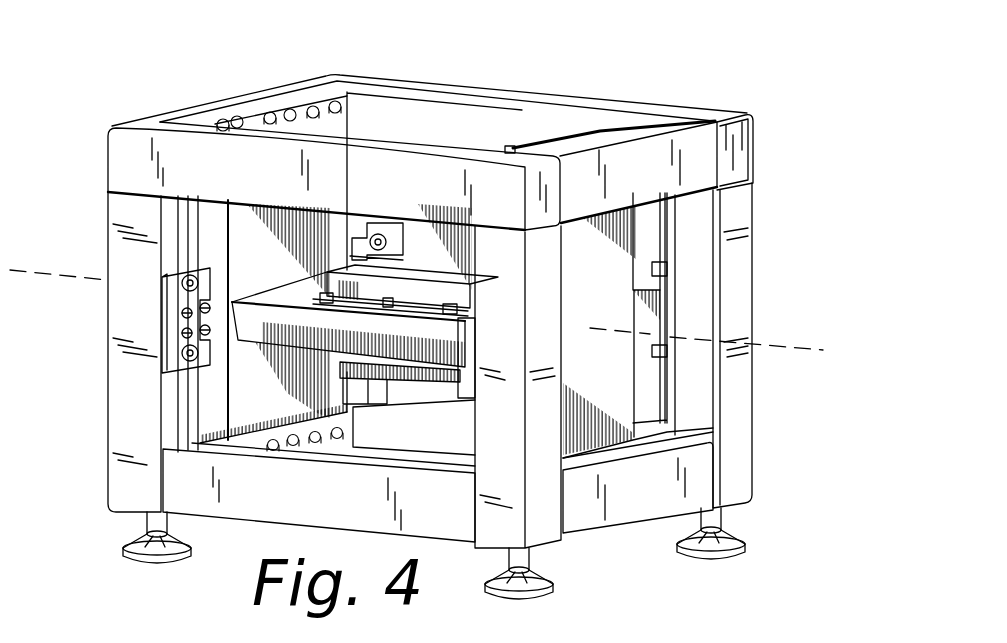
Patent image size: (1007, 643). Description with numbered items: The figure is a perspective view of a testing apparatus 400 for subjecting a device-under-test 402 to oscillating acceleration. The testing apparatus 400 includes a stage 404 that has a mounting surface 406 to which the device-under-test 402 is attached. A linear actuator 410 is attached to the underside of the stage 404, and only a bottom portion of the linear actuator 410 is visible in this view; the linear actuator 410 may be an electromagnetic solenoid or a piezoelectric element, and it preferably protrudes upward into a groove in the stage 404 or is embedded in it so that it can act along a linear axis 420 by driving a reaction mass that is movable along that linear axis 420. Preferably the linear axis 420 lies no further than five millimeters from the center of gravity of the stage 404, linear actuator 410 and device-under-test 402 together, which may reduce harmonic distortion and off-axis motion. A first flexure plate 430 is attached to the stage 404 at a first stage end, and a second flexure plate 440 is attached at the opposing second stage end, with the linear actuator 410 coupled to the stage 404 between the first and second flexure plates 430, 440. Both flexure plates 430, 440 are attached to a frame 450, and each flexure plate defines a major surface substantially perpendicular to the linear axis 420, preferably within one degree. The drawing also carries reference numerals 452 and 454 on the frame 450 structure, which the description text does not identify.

The testing apparatus 400 is at (598, 76).
The device-under-test 402 is at (428, 270).
The stage 404 is at (277, 313).
The mounting surface 406 is at (296, 293).
The linear actuator 410 is at (345, 362).
The linear axis 420 is at (785, 347).
The first flexure plate 430 is at (258, 262).
The second flexure plate 440 is at (622, 371).
The frame 450 is at (751, 148).
The left guide rail 452 is at (212, 221).
The right guide rail 454 is at (650, 397).